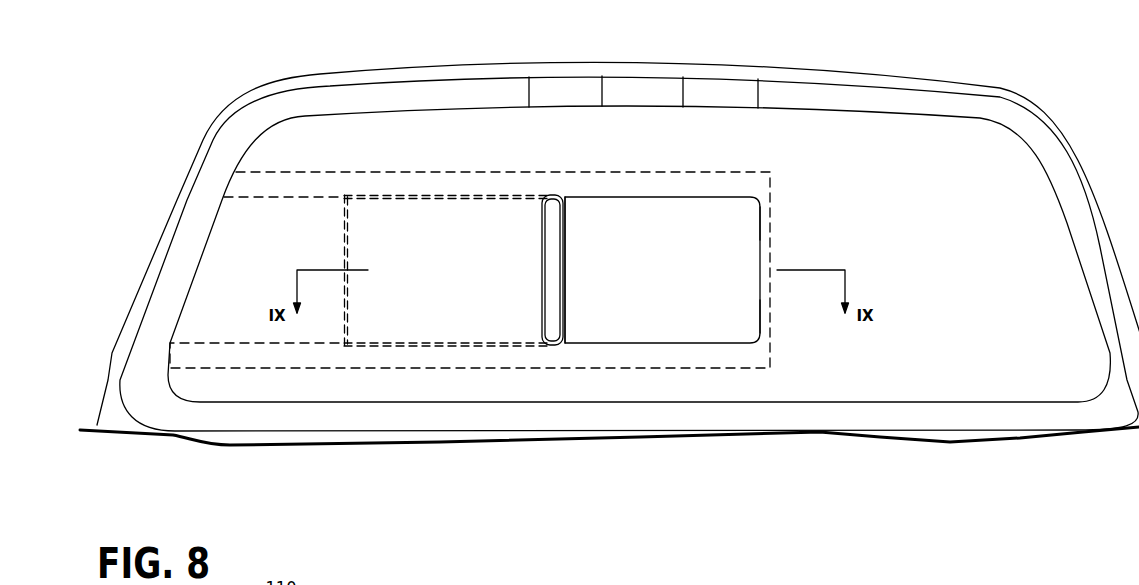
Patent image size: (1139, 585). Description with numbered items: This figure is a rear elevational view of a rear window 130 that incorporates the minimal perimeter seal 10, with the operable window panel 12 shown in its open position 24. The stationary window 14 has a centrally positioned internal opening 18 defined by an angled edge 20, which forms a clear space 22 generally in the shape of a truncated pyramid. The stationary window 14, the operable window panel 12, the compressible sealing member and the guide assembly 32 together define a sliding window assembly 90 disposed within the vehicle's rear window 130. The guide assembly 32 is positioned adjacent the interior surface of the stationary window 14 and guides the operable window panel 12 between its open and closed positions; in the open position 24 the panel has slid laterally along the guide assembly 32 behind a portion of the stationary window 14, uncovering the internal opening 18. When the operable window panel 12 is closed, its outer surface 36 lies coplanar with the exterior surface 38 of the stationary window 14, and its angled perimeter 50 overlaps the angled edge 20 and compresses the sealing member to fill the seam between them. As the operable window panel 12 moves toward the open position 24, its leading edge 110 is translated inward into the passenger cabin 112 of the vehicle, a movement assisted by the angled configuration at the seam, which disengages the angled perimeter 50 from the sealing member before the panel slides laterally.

The minimal perimeter seal 10 is at (717, 345).
The operable window panel 12 is at (417, 307).
The stationary window 14 is at (853, 377).
The internal opening 18 is at (760, 222).
The angled edge 20 is at (760, 307).
The clear space 22 is at (695, 300).
The open position 24 is at (233, 455).
The guide assembly 32 is at (485, 357).
The outer surface 36 is at (553, 235).
The exterior surface 38 is at (955, 196).
The angled perimeter 50 is at (563, 247).
The sliding window assembly 90 is at (372, 160).
The leading edge 110 is at (343, 260).
The passenger cabin 112 is at (707, 235).
The rear window 130 is at (1003, 353).